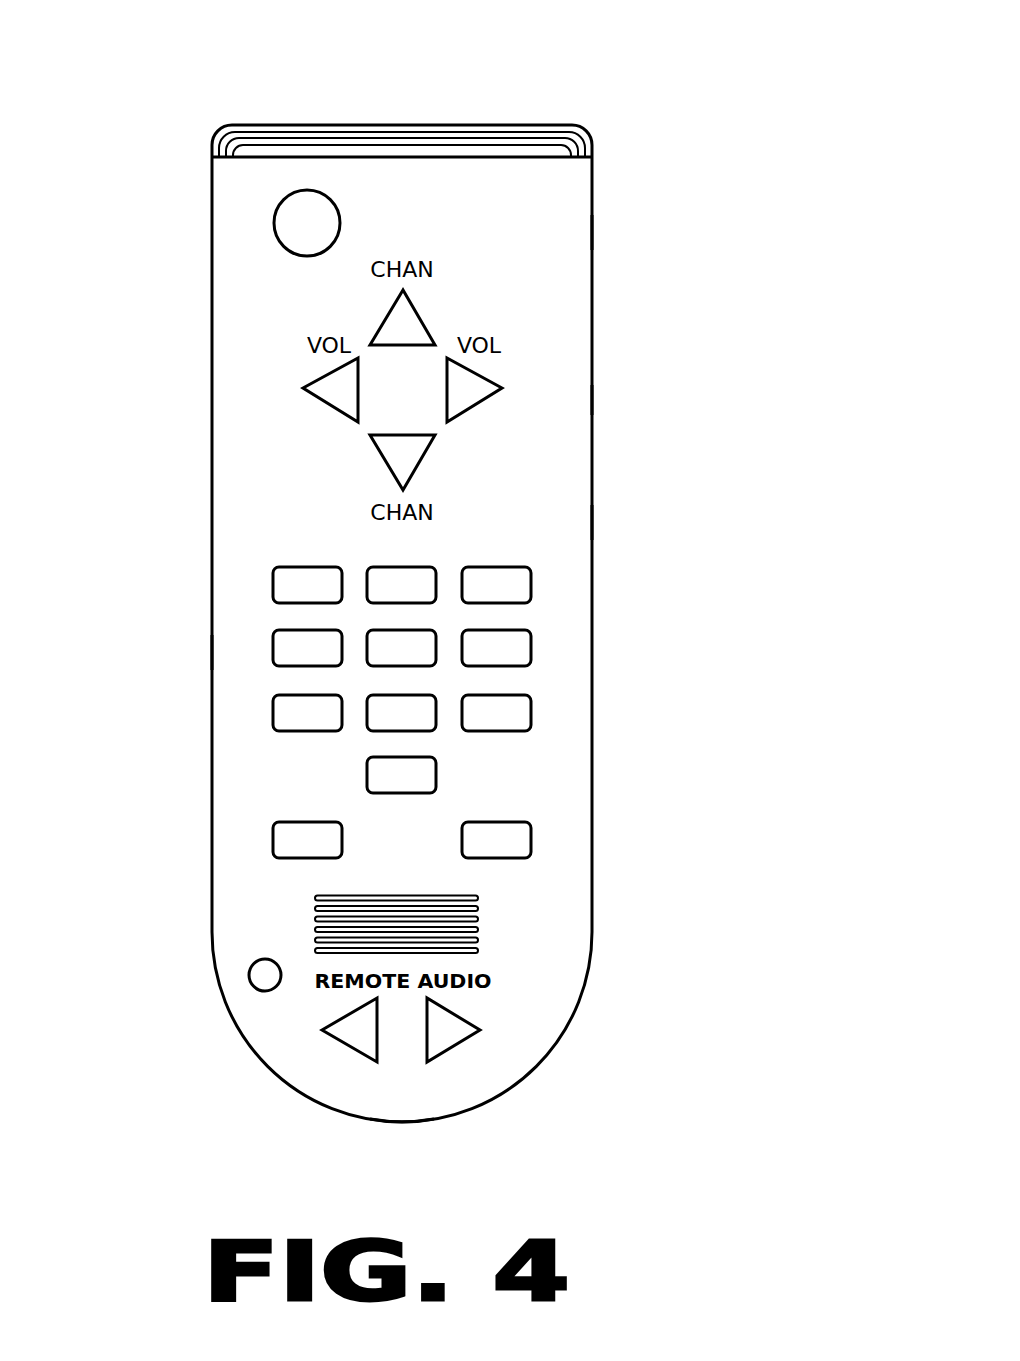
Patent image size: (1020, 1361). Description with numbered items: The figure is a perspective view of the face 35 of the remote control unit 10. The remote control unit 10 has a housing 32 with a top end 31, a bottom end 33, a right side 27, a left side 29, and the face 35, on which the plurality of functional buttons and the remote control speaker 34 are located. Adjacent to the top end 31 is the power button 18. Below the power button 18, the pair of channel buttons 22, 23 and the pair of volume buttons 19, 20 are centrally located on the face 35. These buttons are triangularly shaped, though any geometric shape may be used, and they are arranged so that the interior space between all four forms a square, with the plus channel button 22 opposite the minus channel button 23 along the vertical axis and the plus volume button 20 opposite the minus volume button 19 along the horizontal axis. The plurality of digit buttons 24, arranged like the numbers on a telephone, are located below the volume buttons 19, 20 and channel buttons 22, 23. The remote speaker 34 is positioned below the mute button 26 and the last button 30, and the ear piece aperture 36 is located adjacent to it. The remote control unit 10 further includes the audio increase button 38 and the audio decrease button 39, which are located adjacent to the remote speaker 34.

The remote control unit 10 is at (698, 139).
The power button 18 is at (275, 217).
The minus volume button 19 is at (302, 389).
The plus volume button 20 is at (502, 388).
The plus channel button 22 is at (418, 313).
The minus channel button 23 is at (418, 465).
The digit buttons 24 is at (534, 562).
The mute button 26 is at (273, 842).
The right side 27 is at (593, 523).
The left side 29 is at (211, 655).
The last button 30 is at (534, 836).
The top end 31 is at (408, 128).
The housing 32 is at (593, 233).
The bottom end 33 is at (410, 1122).
The remote control speaker 34 is at (482, 933).
The face 35 is at (565, 400).
The ear piece aperture 36 is at (253, 985).
The audio increase button 38 is at (457, 1047).
The audio decrease button 39 is at (358, 1045).